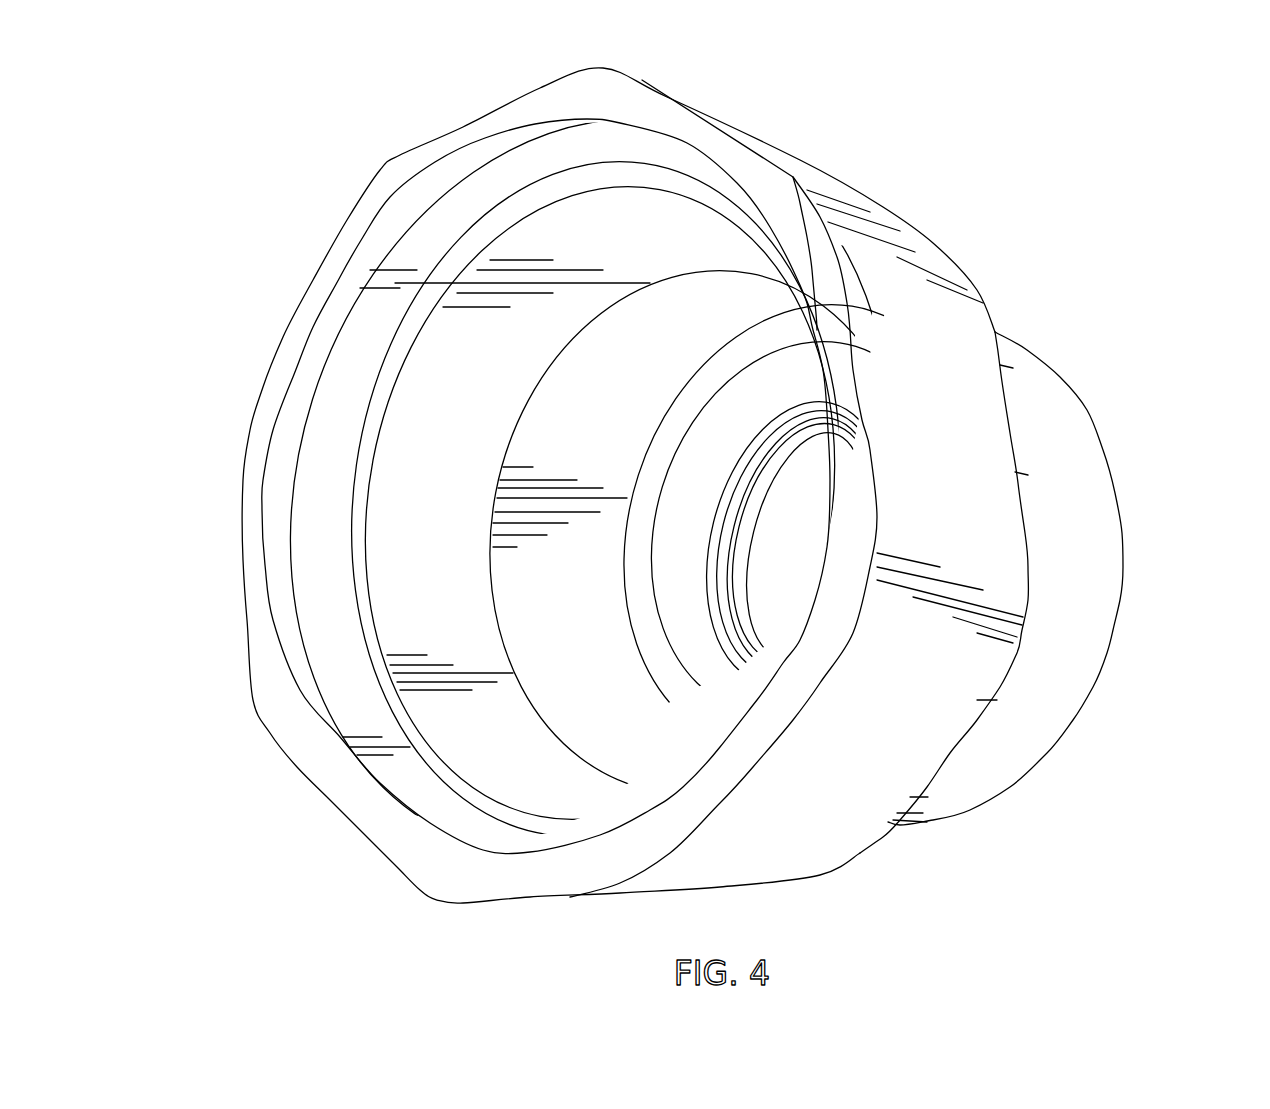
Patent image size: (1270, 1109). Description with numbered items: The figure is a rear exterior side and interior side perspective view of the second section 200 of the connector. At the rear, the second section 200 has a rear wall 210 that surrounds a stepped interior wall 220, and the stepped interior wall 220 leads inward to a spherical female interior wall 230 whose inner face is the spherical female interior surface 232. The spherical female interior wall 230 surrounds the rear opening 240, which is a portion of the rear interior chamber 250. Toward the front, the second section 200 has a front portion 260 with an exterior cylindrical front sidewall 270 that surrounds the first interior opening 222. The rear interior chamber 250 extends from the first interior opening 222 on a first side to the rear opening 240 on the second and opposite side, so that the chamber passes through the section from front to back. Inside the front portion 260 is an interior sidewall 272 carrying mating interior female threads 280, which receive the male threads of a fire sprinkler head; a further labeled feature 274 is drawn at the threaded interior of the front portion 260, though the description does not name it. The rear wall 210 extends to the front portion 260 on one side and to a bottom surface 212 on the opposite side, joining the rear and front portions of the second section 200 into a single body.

The second section 200 is at (1153, 373).
The rear wall 210 is at (900, 237).
The bottom surface 212 is at (793, 223).
The stepped interior wall 220 is at (427, 223).
The first interior opening 222 is at (767, 538).
The spherical female interior wall 230 is at (543, 237).
The spherical female interior surface 232 is at (421, 465).
The rear opening 240 is at (333, 368).
The rear interior chamber 250 is at (290, 553).
The front portion 260 is at (1087, 547).
The cylindrical front sidewall 270 is at (1090, 595).
The interior sidewall 272 is at (723, 573).
The chamfer 274 is at (797, 390).
The interior female threads 280 is at (743, 487).